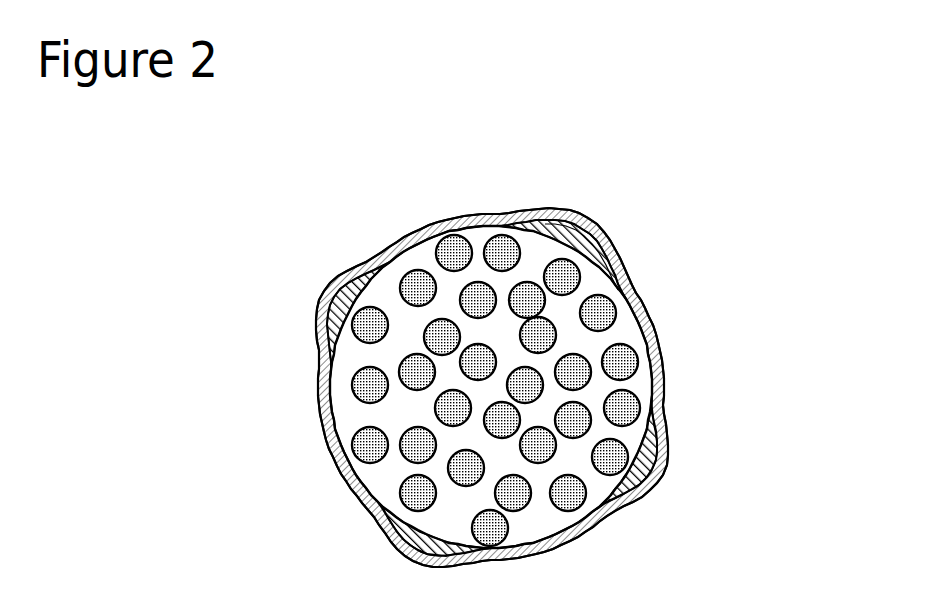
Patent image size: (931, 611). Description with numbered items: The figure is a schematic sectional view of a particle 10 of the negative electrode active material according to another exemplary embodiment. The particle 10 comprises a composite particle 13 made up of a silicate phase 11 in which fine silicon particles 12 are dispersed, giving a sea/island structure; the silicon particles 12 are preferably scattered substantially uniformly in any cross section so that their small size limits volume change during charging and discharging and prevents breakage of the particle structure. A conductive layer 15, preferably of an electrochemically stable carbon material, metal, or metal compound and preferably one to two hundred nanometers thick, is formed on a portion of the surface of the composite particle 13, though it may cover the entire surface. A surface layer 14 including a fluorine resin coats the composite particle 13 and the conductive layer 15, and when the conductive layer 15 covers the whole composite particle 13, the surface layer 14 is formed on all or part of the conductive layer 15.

The particle of the negative electrode active material 10 is at (832, 112).
The silicate phase 11 is at (632, 327).
The silicon particles 12 is at (355, 445).
The composite particle 13 is at (629, 299).
The surface layer 14 is at (320, 378).
The conductive layer 15 is at (316, 303).